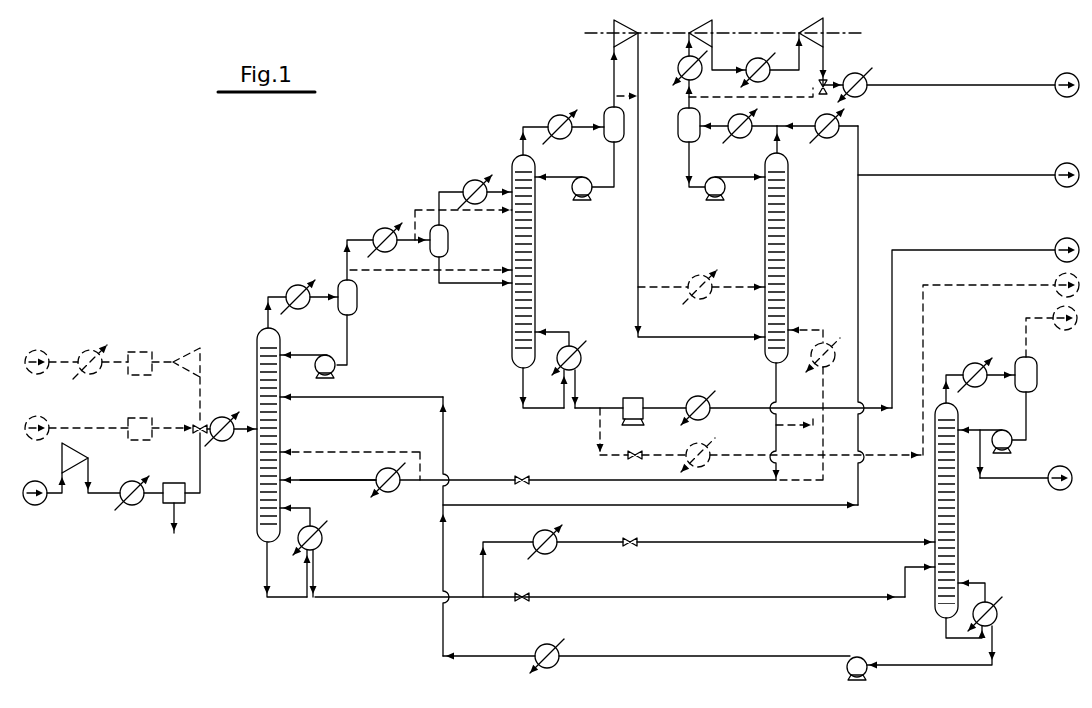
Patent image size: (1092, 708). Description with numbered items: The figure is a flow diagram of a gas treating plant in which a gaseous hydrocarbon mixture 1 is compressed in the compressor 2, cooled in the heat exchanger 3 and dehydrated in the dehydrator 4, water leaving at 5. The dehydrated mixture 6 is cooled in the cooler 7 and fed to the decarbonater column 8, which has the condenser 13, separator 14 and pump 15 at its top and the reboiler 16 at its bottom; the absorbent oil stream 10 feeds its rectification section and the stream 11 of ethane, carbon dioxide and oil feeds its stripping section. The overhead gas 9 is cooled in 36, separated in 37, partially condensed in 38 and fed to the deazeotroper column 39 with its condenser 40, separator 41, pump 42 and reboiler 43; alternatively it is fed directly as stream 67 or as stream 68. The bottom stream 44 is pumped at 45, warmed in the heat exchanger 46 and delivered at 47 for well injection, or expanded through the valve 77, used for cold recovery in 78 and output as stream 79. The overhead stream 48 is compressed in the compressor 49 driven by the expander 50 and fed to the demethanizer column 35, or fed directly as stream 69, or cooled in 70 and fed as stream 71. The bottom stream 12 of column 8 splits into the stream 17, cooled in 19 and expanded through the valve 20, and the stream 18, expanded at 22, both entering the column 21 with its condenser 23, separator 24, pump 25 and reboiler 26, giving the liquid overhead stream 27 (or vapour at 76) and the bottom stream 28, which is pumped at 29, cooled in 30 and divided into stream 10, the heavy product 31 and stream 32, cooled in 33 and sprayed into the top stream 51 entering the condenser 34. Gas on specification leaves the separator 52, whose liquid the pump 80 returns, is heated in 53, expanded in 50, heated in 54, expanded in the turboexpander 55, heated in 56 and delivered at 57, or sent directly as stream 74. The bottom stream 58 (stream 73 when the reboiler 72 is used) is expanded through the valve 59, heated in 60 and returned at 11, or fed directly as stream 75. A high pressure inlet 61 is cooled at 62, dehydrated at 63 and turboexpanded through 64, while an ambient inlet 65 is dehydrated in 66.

The gaseous hydrocarbon mixture 1 is at (35, 481).
The compressor 2 is at (62, 467).
The heat exchanger 3 is at (132, 505).
The dehydrator 4 is at (174, 482).
The water removal 5 is at (172, 538).
The dehydrated mixture 6 is at (193, 437).
The cooler 7 is at (221, 443).
The decarbonater column 8 is at (281, 430).
The overhead gas 9 is at (347, 270).
The absorbent oil stream 10 is at (420, 396).
The stripping section feed stream 11 is at (350, 479).
The bottom stream 12 is at (385, 596).
The condenser 13 is at (298, 310).
The separator 14 is at (357, 297).
The pump 15 is at (337, 372).
The reboiler 16 is at (323, 538).
The first divided stream 17 is at (483, 566).
The second divided stream 18 is at (487, 602).
The cooler 19 is at (547, 555).
The valve 20 is at (746, 528).
The depropanizer or debutanizer column 21 is at (960, 530).
The expansion valve 22 is at (528, 583).
The condenser 23 is at (977, 388).
The separator 24 is at (1038, 376).
The pump 25 is at (985, 454).
The reboiler 26 is at (999, 606).
The overhead product stream 27 is at (1061, 492).
The bottom product stream 28 is at (931, 647).
The pump 29 is at (845, 670).
The heat exchanger 30 is at (556, 665).
The heavy product stream 31 is at (1065, 188).
The heavy hydrocarbon stream 32 is at (859, 147).
The heat exchanger 33 is at (828, 138).
The condenser 34 is at (741, 139).
The demethanizer column 35 is at (790, 237).
The cooler 36 is at (384, 228).
The separator 37 is at (448, 248).
The partial condenser 38 is at (476, 180).
The deazeotroper column 39 is at (536, 247).
The condenser 40 is at (562, 122).
The separator 41 is at (604, 144).
The pump 42 is at (572, 193).
The reboiler 43 is at (583, 358).
The bottom product stream 44 is at (578, 384).
The pump 45 is at (635, 398).
The heat exchanger 46 is at (767, 398).
The acid gas injection outlet 47 is at (1058, 243).
The overhead product stream 48 is at (613, 92).
The compressor 49 is at (612, 47).
The turboexpander 50 is at (714, 44).
The column top stream 51 is at (817, 137).
The separator 52 is at (678, 128).
The heater 53 is at (678, 68).
The heater 54 is at (772, 60).
The turboexpander 55 is at (824, 43).
The heater 56 is at (862, 77).
The gas delivery 57 is at (1065, 98).
The bottom product stream 58 is at (776, 440).
The valve 59 is at (519, 474).
The heater 60 is at (389, 494).
The high pressure inlet stream 61 is at (40, 350).
The cooler 62 is at (78, 350).
The dehydrator 63 is at (142, 351).
The turboexpander 64 is at (203, 362).
The ambient temperature inlet stream 65 is at (40, 416).
The dehydrator 66 is at (145, 418).
The direct feed stream 67 is at (403, 273).
The partially condensed feed stream 68 is at (462, 213).
The uncompressed feed stream 69 is at (630, 83).
The heat exchanger 70 is at (677, 275).
The intermediate feed stream 71 is at (728, 292).
The reboiler 72 is at (832, 372).
The column bottom product stream 73 is at (794, 481).
The pipeline stream 74 is at (793, 128).
The direct bottom feed stream 75 is at (325, 451).
The vapour phase product outlet 76 is at (1064, 331).
The valve 77 is at (640, 442).
The heat exchanger 78 is at (699, 446).
The output acid gas stream 79 is at (1055, 292).
The pump 80 is at (723, 197).